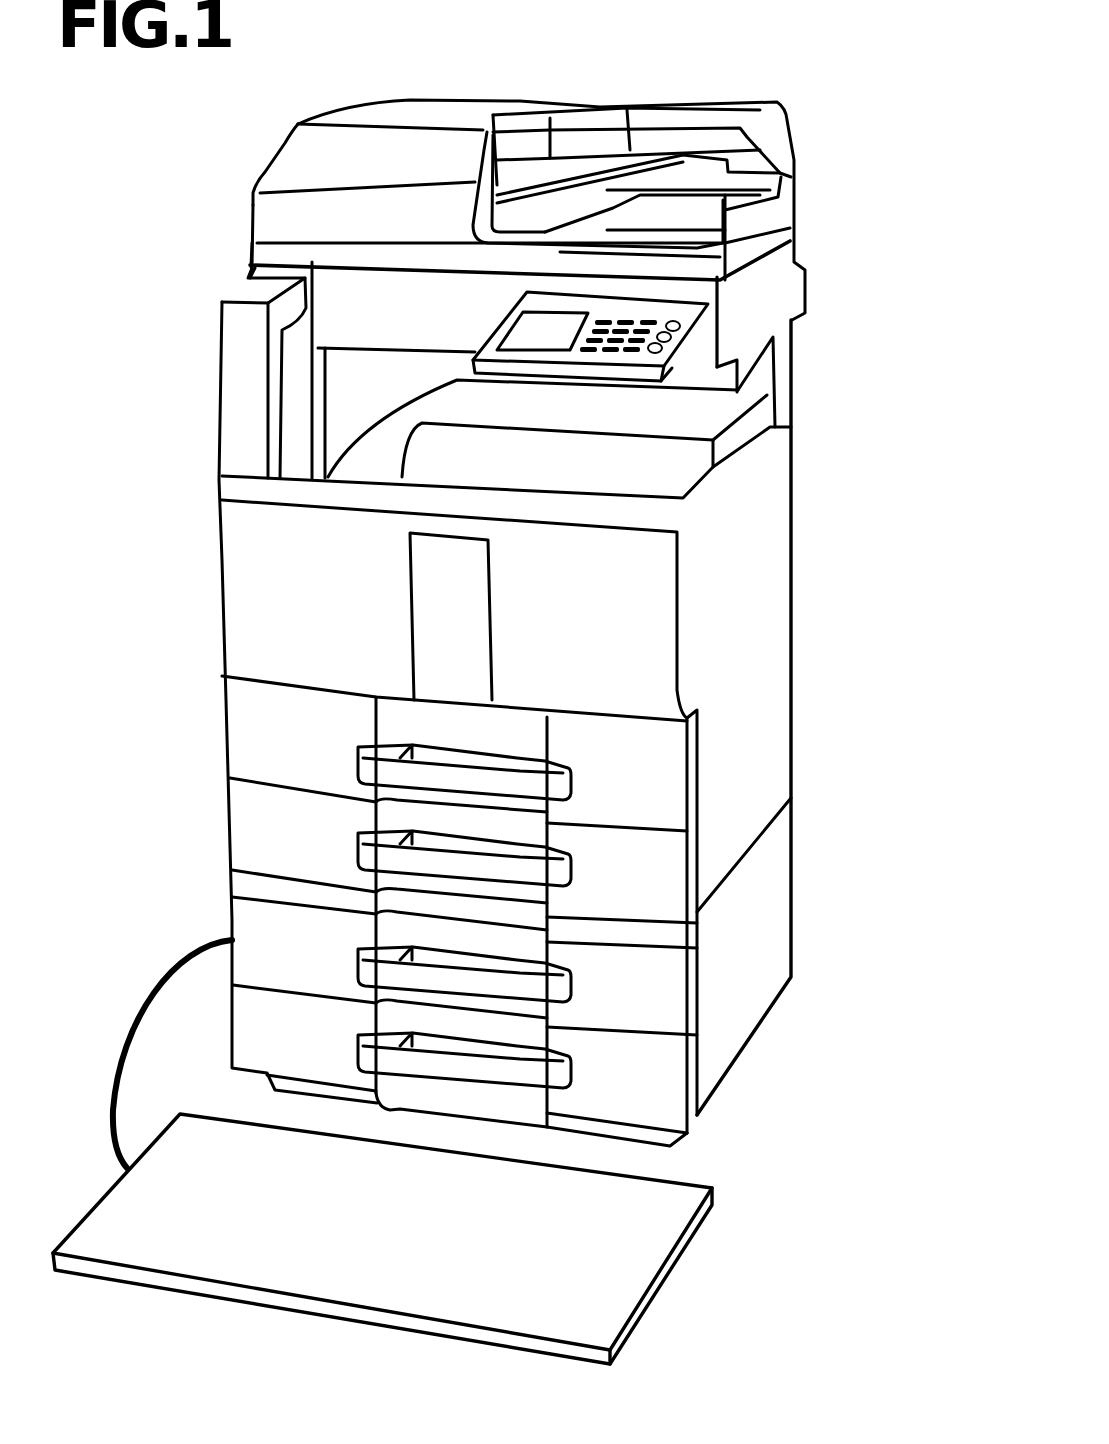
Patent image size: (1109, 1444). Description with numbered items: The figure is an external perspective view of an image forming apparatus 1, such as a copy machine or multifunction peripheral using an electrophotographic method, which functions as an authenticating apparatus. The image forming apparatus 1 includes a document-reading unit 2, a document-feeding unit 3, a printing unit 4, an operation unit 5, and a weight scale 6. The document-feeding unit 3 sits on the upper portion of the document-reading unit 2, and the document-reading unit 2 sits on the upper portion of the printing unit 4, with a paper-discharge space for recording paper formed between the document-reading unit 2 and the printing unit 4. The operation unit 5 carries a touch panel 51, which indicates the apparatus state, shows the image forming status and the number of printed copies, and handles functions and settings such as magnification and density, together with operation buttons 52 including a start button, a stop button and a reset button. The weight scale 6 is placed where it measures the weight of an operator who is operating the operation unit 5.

The image forming apparatus 1 is at (686, 68).
The document-reading unit 2 is at (785, 270).
The document-feeding unit 3 is at (773, 150).
The printing unit 4 is at (763, 553).
The operation unit 5 is at (900, 262).
The touch panel 51 is at (560, 328).
The operation buttons 52 is at (684, 329).
The weight scale 6 is at (628, 1233).